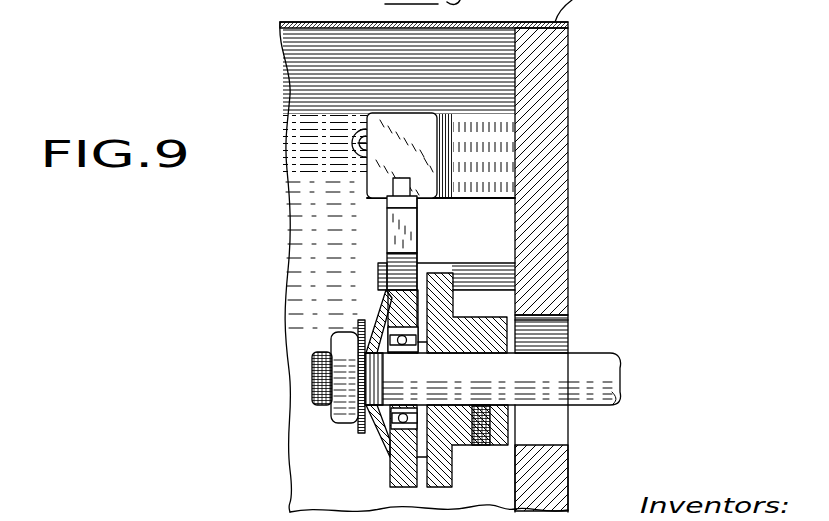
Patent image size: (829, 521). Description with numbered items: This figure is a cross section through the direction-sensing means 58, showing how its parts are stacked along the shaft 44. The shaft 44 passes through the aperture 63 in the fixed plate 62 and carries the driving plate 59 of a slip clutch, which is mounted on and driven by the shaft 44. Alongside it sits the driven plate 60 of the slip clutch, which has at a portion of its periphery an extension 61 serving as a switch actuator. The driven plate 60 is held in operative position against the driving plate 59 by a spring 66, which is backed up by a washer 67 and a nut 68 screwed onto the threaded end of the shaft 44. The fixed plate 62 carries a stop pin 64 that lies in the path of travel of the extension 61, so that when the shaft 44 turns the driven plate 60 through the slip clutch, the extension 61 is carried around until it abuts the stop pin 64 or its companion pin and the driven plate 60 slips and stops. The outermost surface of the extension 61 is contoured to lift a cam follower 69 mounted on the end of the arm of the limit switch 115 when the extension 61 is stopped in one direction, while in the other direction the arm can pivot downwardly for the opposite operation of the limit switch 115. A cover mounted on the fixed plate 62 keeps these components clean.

The shaft 44 is at (607, 353).
The direction-sensing means 58 is at (372, 469).
The driving plate 59 is at (467, 450).
The driven plate 60 is at (387, 257).
The extension 61 is at (387, 221).
The fixed plate 62 is at (570, 230).
The aperture 63 is at (570, 320).
The stop pin 64 is at (477, 238).
The spring 66 is at (383, 317).
The washer 67 is at (358, 321).
The nut 68 is at (342, 422).
The cam follower 69 is at (393, 184).
The block 115 is at (452, 115).